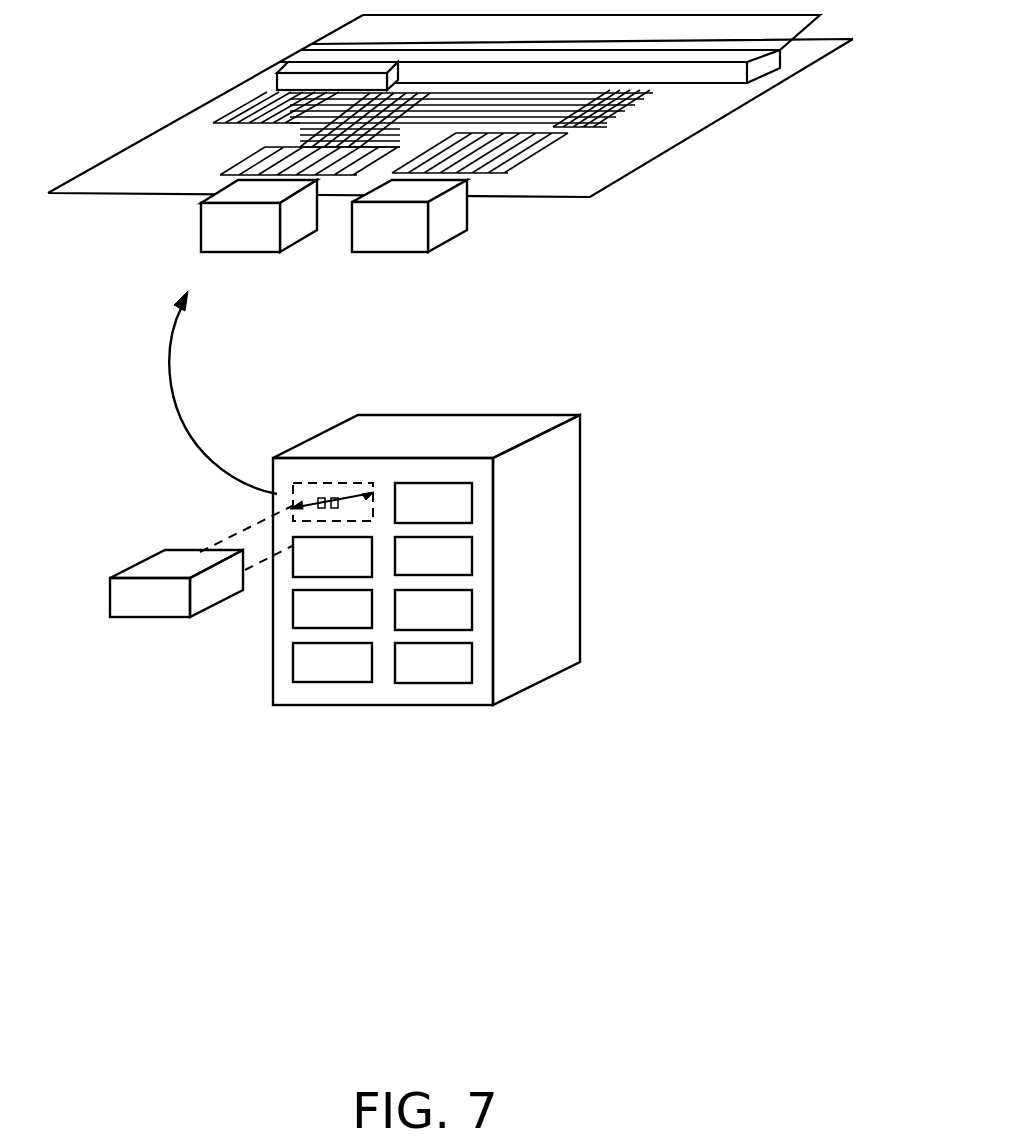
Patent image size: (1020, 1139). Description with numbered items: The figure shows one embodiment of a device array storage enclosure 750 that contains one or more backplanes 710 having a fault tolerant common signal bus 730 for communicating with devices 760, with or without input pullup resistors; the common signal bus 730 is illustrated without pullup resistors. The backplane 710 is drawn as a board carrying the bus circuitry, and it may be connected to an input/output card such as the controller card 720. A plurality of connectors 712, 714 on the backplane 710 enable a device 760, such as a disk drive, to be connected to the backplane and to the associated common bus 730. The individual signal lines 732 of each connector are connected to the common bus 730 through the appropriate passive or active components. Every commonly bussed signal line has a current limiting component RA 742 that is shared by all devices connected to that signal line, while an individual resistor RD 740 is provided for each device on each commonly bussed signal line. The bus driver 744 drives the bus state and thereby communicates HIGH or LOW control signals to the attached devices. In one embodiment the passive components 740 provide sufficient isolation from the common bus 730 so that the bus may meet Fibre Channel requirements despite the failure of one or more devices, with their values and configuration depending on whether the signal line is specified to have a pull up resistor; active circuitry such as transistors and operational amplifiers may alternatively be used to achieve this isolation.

The backplane 710 is at (693, 130).
The controller card 720 is at (820, 15).
The connector 712 is at (200, 222).
The connector 714 is at (453, 218).
The common signal bus 730 is at (590, 128).
The individual signal lines 732 is at (312, 133).
The resistor RD 740 is at (513, 173).
The current limiting component RA 742 is at (650, 127).
The bus driver 744 is at (275, 78).
The device array storage enclosure 750 is at (573, 462).
The device 760 is at (148, 552).